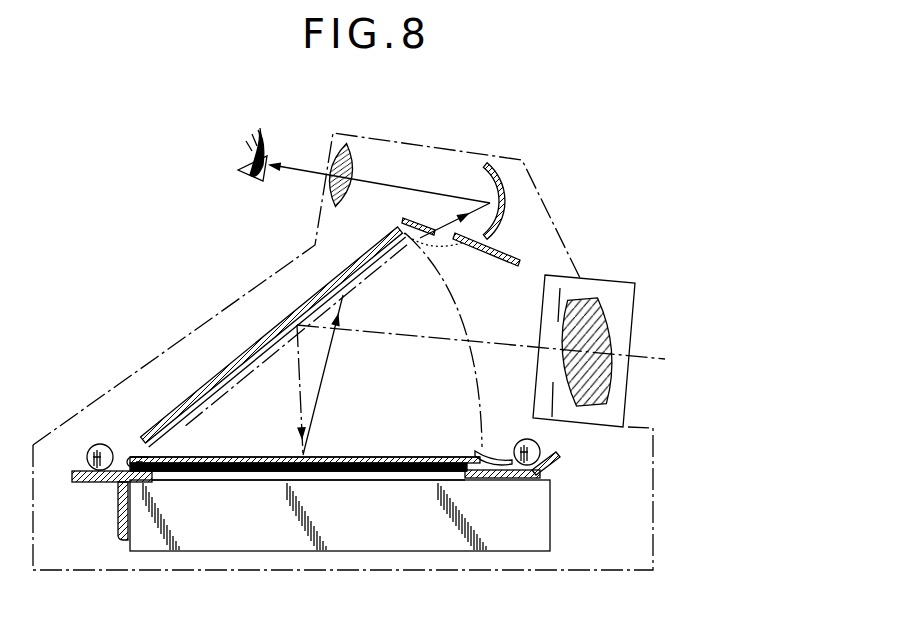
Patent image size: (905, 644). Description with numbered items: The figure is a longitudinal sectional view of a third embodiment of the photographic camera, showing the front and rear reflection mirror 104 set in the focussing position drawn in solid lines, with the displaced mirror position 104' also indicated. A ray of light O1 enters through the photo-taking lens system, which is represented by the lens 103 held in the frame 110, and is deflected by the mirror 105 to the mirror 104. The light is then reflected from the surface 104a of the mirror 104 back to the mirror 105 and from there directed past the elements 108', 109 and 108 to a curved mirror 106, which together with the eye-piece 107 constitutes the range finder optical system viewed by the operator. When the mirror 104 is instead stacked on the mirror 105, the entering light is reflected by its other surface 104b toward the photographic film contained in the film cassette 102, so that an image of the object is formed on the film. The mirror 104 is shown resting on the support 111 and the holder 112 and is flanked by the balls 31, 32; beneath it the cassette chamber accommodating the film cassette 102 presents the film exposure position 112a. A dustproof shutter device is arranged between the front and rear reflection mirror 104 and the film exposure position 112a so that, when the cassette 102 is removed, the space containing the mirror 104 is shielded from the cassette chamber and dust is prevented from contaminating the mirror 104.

The eye-piece 107 is at (348, 143).
The curved mirror 106 is at (497, 168).
The reflecting plate 109 is at (506, 248).
The small mirror 108' is at (446, 260).
The lens frame 110 is at (565, 300).
The photographic lens 103 is at (612, 334).
The ray of light O1 is at (495, 351).
The mirror 105 is at (262, 336).
The reflecting surface of mirror 104' is at (298, 334).
The front and rear reflection mirror 104 is at (303, 438).
The surface of the mirror 104a is at (364, 457).
The surface of the mirror 104b is at (368, 472).
The auxiliary mirror 108 is at (498, 435).
The ball 31 is at (541, 450).
The ball 32 is at (88, 455).
The support member 111 is at (205, 472).
The L-shaped holder 112 is at (120, 541).
The film exposure position 112a is at (255, 472).
The film cassette 102 is at (423, 551).